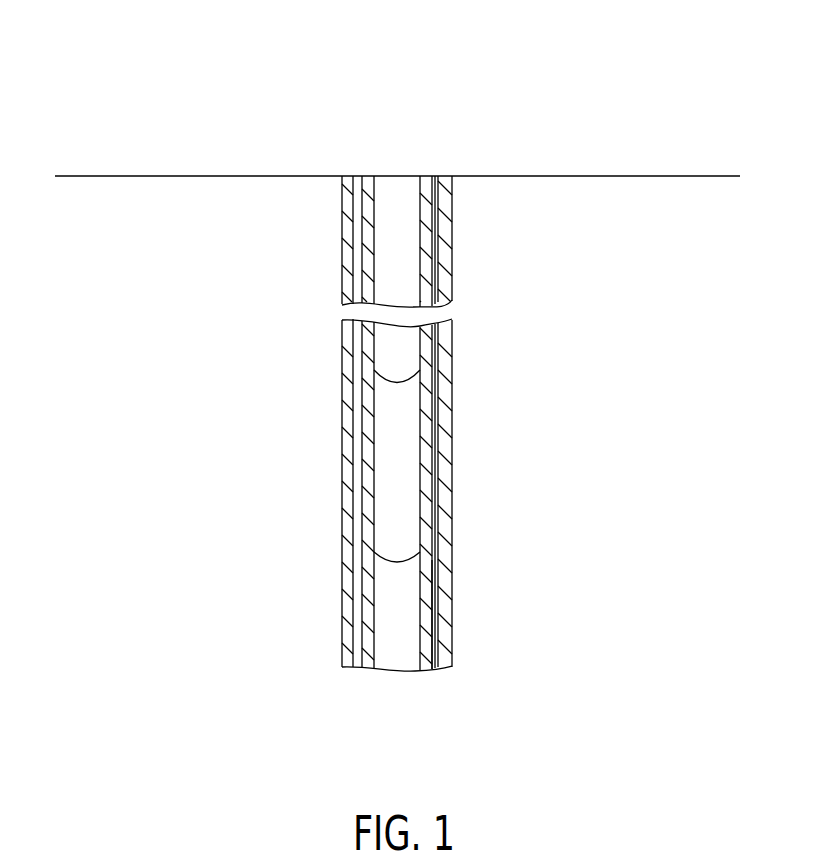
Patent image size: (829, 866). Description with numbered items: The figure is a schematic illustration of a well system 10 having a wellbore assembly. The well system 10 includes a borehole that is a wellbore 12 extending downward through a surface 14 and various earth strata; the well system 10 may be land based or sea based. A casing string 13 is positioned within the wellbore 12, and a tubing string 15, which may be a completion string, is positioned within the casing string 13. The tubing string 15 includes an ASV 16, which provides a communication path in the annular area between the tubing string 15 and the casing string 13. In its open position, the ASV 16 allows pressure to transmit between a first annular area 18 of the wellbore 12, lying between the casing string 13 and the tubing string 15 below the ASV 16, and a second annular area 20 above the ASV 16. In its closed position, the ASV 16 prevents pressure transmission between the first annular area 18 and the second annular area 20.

The well system 10 is at (455, 81).
The wellbore 12 is at (452, 370).
The casing string 13 is at (348, 234).
The surface 14 is at (569, 166).
The tubing string 15 is at (427, 227).
The ASV 16 is at (400, 505).
The first annular area 18 is at (445, 622).
The second annular area 20 is at (445, 278).